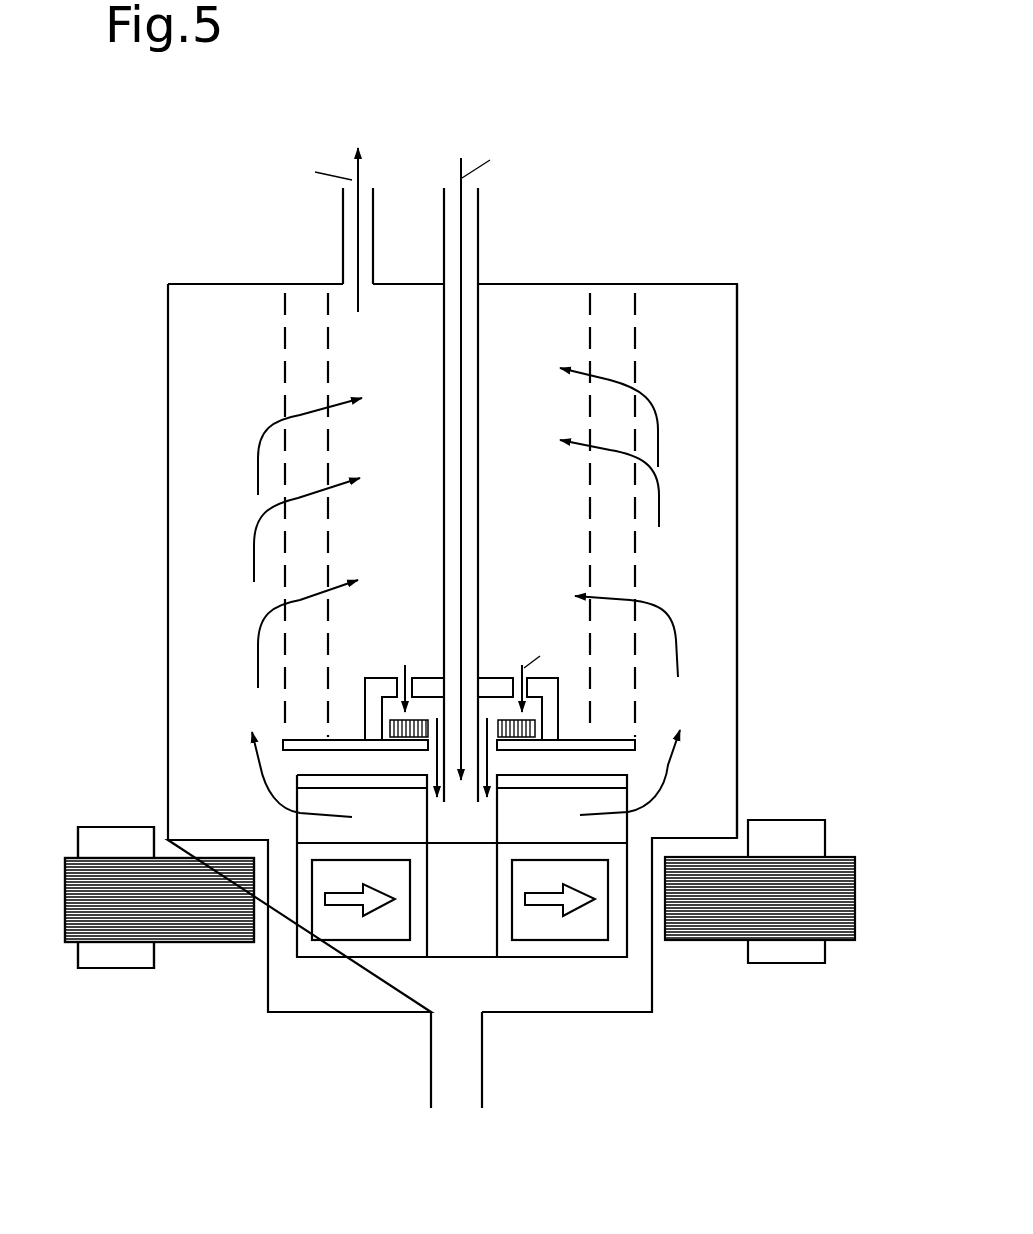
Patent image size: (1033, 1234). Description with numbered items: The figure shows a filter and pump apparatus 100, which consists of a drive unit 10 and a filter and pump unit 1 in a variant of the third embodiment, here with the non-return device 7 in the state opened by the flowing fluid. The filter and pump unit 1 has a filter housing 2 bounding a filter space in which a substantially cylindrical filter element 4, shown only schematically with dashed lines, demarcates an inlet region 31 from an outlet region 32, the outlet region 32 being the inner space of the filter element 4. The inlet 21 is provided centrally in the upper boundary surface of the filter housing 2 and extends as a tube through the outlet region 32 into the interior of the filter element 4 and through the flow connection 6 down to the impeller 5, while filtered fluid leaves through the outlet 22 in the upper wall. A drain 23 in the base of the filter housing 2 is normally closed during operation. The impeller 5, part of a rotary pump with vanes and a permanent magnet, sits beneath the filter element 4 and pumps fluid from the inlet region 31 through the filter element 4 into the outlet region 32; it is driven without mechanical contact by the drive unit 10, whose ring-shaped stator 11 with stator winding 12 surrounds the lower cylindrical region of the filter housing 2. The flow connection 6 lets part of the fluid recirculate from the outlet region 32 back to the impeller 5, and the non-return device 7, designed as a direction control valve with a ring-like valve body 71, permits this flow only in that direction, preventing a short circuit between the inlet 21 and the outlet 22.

The filter and pump apparatus 100 is at (702, 183).
The filter and pump unit 1 is at (703, 283).
The filter housing 2 is at (737, 425).
The filter element 4 is at (283, 377).
The inlet region 31 is at (188, 438).
The outlet region 32 is at (374, 391).
The outlet 22 is at (343, 255).
The inlet 21 is at (480, 245).
The drain 23 is at (484, 1075).
The valve body 71 is at (398, 720).
The non-return device 7 is at (497, 678).
The flow connection 6 is at (543, 712).
The impeller 5 is at (628, 822).
The stator 11 is at (857, 897).
The stator winding 12 is at (803, 963).
The drive unit 10 is at (102, 968).